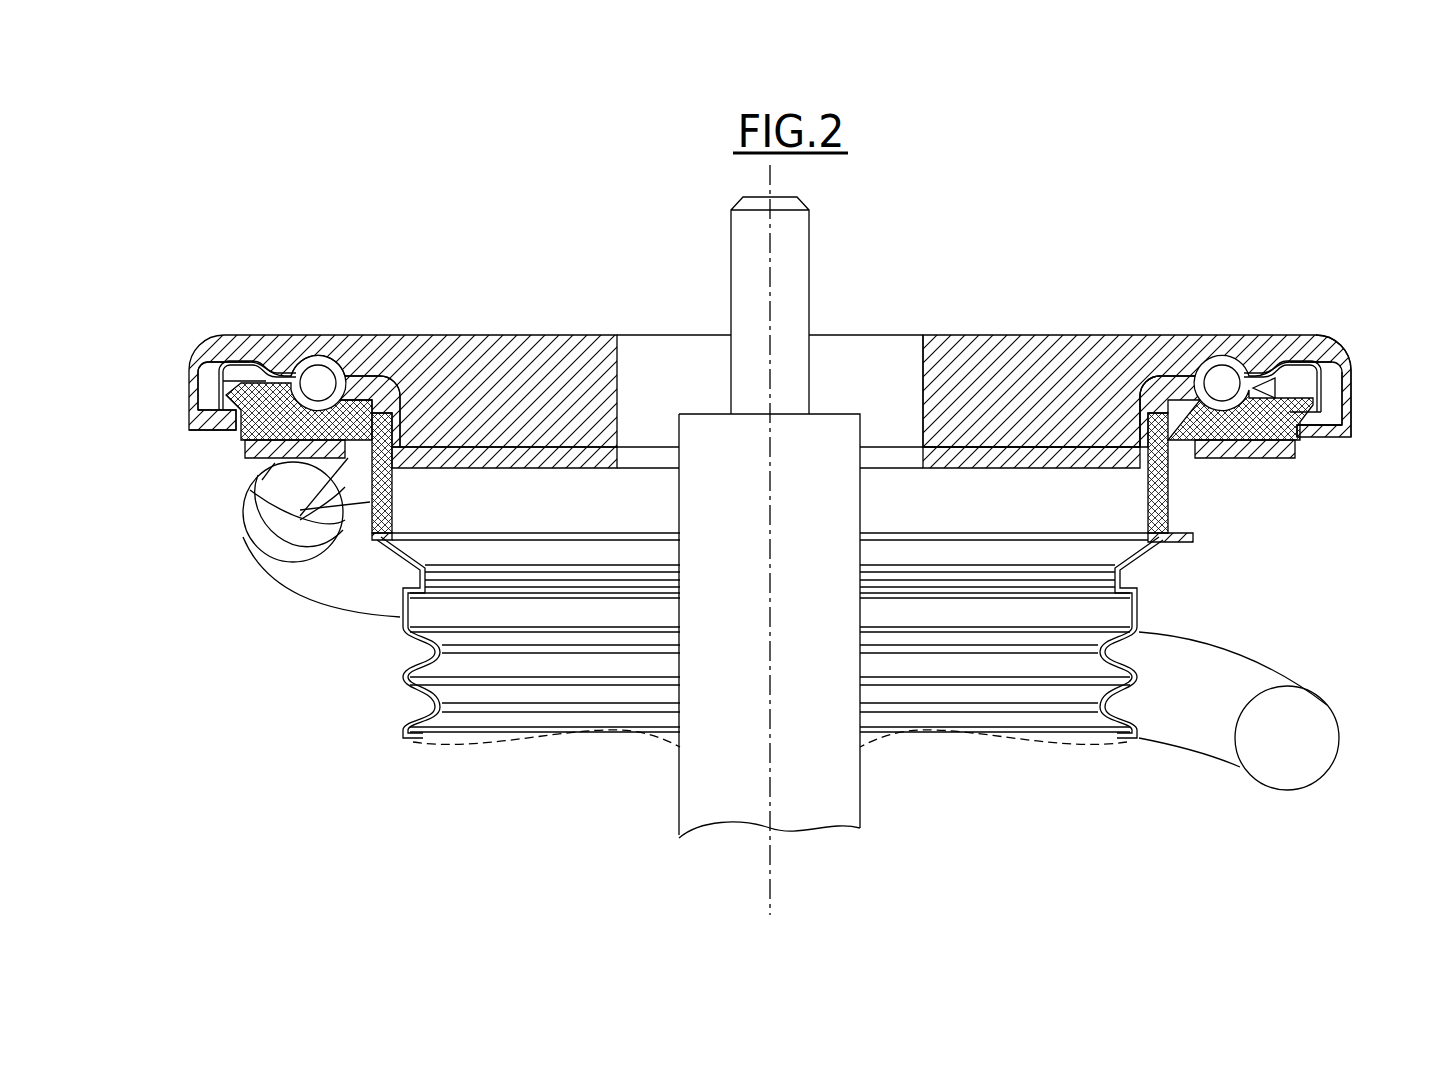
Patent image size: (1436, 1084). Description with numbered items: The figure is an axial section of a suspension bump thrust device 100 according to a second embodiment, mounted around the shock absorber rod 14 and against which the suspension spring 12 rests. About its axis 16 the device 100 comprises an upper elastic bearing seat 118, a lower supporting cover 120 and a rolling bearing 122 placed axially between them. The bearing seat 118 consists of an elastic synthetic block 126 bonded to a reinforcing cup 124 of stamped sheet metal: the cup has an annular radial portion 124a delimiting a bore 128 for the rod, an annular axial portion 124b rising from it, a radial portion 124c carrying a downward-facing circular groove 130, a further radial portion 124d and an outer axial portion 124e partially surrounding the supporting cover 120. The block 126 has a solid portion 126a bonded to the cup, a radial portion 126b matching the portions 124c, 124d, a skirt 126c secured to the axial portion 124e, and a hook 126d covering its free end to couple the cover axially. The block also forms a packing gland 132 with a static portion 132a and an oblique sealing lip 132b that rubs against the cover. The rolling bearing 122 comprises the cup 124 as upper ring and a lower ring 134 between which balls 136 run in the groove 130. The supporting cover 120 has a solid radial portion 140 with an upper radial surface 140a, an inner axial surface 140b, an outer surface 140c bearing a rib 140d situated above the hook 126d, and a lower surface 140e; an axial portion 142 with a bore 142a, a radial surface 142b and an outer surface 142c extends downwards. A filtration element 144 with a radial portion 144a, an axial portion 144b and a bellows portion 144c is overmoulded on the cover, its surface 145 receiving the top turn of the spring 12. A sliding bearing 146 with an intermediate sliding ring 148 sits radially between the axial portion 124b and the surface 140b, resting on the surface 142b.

The suspension spring 12 is at (1286, 790).
The shock absorber rod 14 is at (735, 232).
The axis 16 is at (767, 906).
The suspension bump thrust device 100 is at (321, 278).
The upper elastic bearing seat 118 is at (1061, 278).
The lower supporting cover 120 is at (1263, 432).
The rolling bearing 122 is at (350, 366).
The reinforcing cup 124 is at (410, 430).
The annular radial portion 124a is at (980, 458).
The annular axial portion 124b is at (1097, 420).
The annular radial portion 124c is at (1160, 368).
The annular radial portion 124d is at (1300, 368).
The outer annular axial portion 124e is at (1340, 395).
The elastic synthetic block 126 is at (934, 333).
The annular solid portion 126a is at (985, 365).
The annular radial portion 126b is at (1257, 342).
The annular skirt 126c is at (1345, 375).
The hook 126d is at (1305, 452).
The bore 128 is at (922, 458).
The circular groove 130 is at (1218, 382).
The packing gland 132 is at (1345, 350).
The annular static portion 132a is at (1330, 412).
The annular sealing lip 132b is at (1318, 437).
The lower ring 134 is at (1220, 405).
The rolling elements 136 is at (1138, 432).
The annular solid radial portion 140 is at (272, 414).
The upper annular radial surface 140a is at (275, 392).
The inner axial surface 140b is at (404, 396).
The axial outer surface 140c is at (236, 433).
The annular rib 140d is at (222, 392).
The radial lower surface 140e is at (260, 455).
The annular axial portion 142 is at (335, 548).
The axial bore 142a is at (300, 516).
The annular radial surface 142b is at (300, 510).
The outer axial surface 142c is at (300, 520).
The filtration element 144 is at (1195, 536).
The annular radial portion 144a is at (1280, 458).
The axial portion 144b is at (1190, 508).
The bellows portion 144c is at (1152, 553).
The radial bearing surface 145 is at (262, 480).
The sliding bearing 146 is at (403, 436).
The intermediate sliding ring 148 is at (1133, 445).